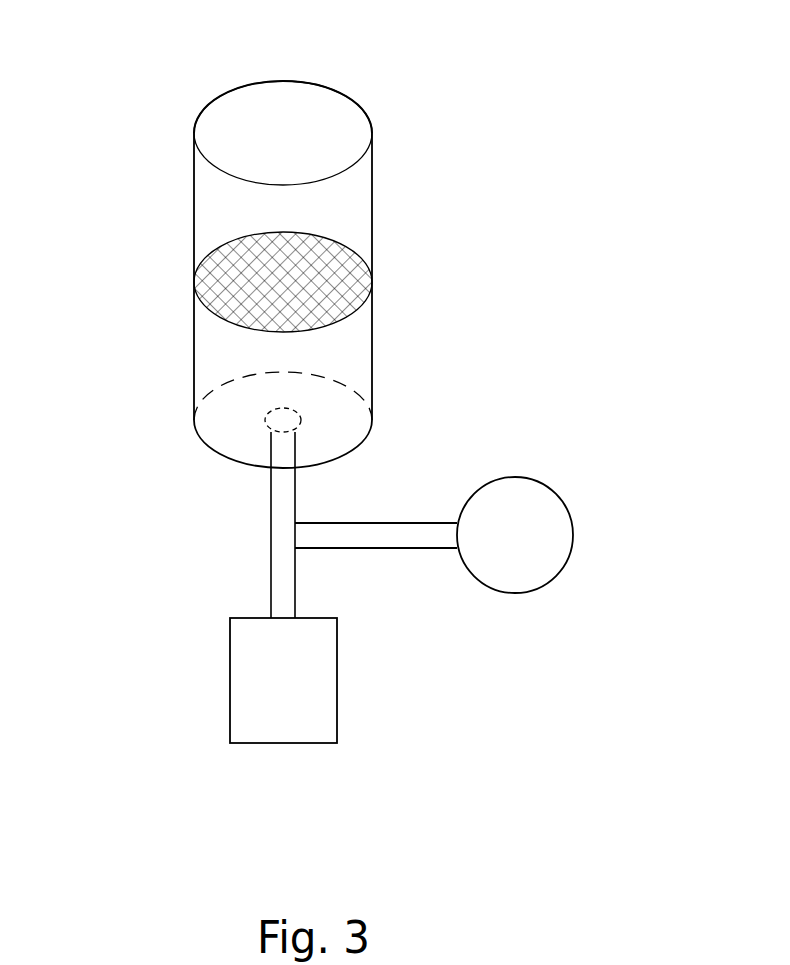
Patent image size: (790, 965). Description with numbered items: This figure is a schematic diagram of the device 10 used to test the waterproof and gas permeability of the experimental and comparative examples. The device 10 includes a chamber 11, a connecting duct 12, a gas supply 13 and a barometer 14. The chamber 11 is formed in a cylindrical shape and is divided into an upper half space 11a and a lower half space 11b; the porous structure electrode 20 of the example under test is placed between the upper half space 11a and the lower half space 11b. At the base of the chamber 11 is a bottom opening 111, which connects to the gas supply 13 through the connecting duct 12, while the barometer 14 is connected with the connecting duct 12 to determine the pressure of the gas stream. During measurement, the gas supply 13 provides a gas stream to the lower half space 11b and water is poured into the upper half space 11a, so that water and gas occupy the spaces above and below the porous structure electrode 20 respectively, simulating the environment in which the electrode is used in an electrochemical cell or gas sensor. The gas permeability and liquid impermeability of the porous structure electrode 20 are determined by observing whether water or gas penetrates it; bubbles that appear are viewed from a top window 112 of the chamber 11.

The device 10 is at (437, 118).
The chamber 11 is at (188, 185).
The top window 112 is at (283, 131).
The upper half space 11a is at (304, 211).
The lower half space 11b is at (301, 349).
The bottom opening 111 is at (263, 420).
The porous structure electrode 20 is at (246, 297).
The connecting duct 12 is at (270, 577).
The gas supply 13 is at (230, 678).
The barometer 14 is at (553, 489).